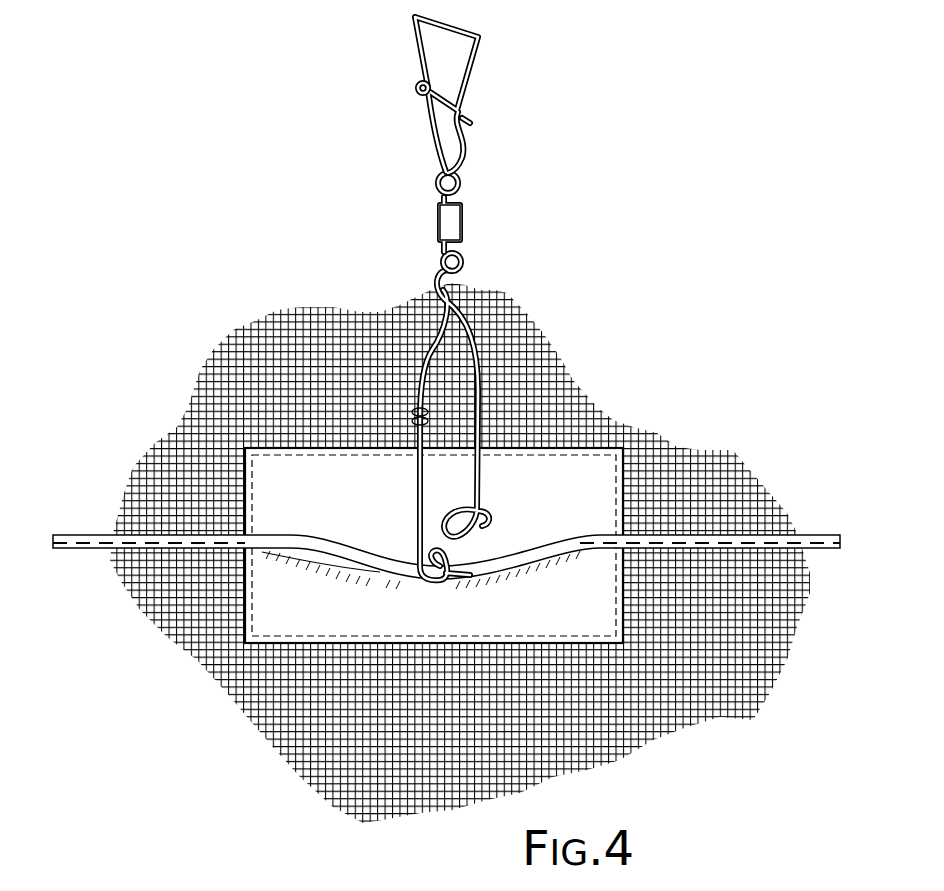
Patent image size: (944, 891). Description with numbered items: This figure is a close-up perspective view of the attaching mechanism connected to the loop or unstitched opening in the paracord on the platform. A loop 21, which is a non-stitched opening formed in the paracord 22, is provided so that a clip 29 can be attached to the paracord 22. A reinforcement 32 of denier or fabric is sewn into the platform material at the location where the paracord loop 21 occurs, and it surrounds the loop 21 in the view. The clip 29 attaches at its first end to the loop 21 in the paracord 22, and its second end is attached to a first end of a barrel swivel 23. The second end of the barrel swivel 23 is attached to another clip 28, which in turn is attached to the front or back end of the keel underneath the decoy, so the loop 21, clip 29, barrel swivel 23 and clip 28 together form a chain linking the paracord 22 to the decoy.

The loop 21 is at (376, 560).
The paracord 22 is at (110, 542).
The barrel swivel 23 is at (462, 226).
The clip 28 is at (470, 62).
The clip 29 is at (412, 530).
The reinforcement 32 is at (304, 498).